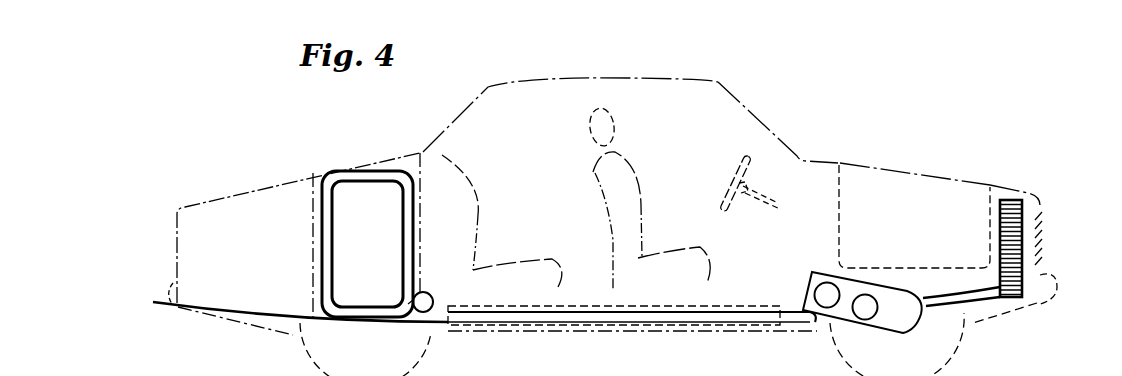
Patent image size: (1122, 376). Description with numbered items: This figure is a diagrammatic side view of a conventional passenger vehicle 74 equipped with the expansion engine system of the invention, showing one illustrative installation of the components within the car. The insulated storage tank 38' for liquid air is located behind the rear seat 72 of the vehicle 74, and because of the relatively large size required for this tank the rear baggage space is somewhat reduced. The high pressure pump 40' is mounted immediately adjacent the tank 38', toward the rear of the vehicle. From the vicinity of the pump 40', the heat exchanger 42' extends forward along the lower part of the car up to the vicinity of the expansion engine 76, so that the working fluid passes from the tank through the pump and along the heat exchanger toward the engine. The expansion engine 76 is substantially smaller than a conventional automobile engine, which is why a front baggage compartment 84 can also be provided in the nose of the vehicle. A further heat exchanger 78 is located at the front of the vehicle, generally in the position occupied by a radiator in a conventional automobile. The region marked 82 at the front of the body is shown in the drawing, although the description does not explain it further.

The door frame member 38' is at (366, 225).
The coupling 40' is at (442, 332).
The sill conduit 42' is at (632, 339).
The front seat 72 is at (473, 198).
The roof 74 is at (682, 92).
The pump unit 76 is at (807, 287).
The rear heat exchanger 78 is at (1022, 212).
The hood 82 is at (220, 218).
The tank compartment 84 is at (863, 177).